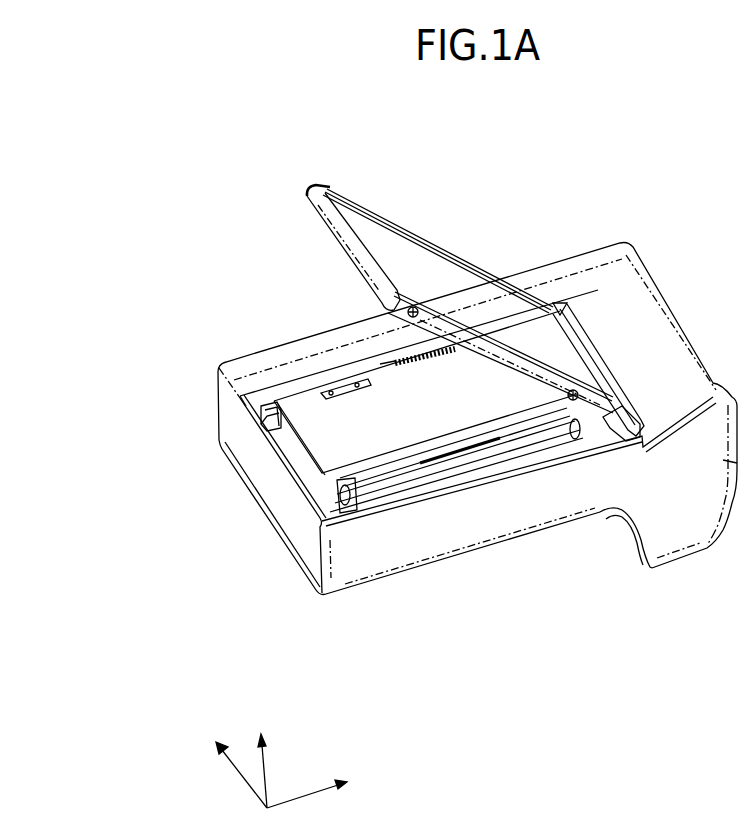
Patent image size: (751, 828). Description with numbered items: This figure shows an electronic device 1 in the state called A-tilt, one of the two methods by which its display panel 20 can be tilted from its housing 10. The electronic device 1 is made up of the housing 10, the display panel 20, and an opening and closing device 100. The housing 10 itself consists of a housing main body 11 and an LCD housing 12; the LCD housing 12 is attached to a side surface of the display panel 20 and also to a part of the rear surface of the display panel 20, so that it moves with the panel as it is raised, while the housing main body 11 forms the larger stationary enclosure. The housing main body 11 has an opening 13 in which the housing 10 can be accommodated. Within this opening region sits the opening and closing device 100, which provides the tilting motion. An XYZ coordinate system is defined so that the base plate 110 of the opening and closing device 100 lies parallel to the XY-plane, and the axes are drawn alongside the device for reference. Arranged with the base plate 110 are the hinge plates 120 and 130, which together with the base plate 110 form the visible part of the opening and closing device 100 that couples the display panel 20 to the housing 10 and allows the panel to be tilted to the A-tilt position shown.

The electronic device 1 is at (690, 181).
The housing 10 is at (578, 259).
The housing main body 11 is at (640, 325).
The LCD housing 12 is at (328, 186).
The opening 13 is at (262, 422).
The display panel 20 is at (417, 258).
The opening and closing device 100 is at (455, 655).
The base plate 110 is at (403, 470).
The hinge plate 120 is at (373, 475).
The hinge plate 130 is at (340, 460).